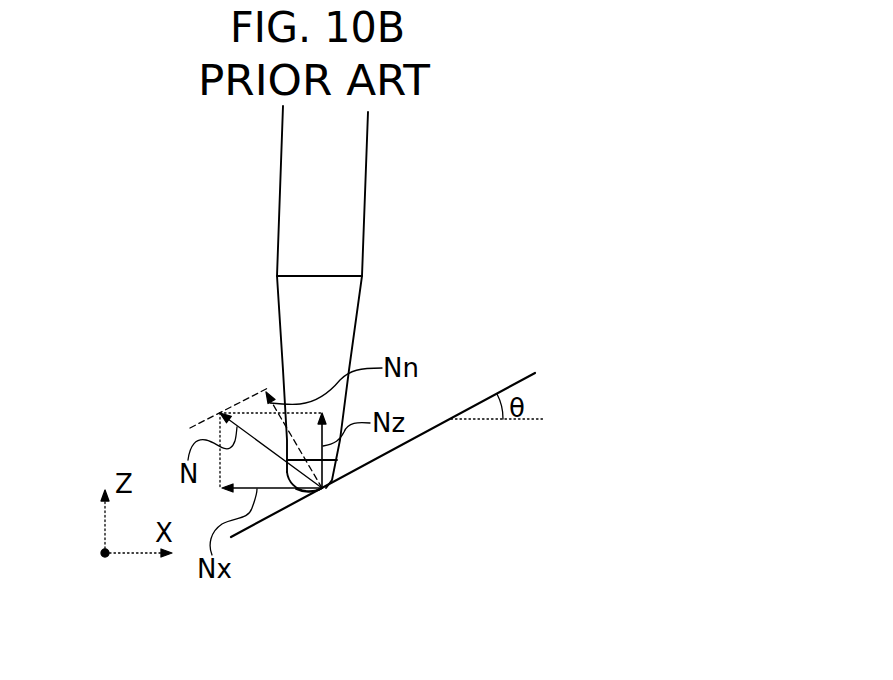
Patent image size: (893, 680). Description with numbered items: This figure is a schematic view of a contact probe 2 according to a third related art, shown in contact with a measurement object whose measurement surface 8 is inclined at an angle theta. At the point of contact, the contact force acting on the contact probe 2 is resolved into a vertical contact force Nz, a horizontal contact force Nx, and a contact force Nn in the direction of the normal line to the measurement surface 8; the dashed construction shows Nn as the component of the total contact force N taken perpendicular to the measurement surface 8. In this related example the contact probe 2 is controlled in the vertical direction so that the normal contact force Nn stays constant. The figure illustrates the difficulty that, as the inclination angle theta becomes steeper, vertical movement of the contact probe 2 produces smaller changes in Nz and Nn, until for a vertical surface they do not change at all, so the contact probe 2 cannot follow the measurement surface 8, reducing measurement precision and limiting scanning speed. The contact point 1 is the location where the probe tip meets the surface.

The contact point of tool tip 1 is at (342, 477).
The contact probe 2 is at (290, 225).
The measurement surface 8 is at (412, 441).